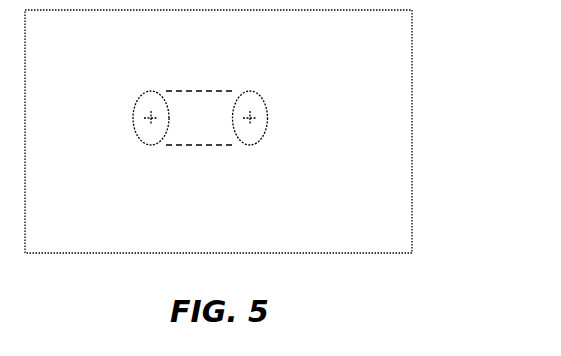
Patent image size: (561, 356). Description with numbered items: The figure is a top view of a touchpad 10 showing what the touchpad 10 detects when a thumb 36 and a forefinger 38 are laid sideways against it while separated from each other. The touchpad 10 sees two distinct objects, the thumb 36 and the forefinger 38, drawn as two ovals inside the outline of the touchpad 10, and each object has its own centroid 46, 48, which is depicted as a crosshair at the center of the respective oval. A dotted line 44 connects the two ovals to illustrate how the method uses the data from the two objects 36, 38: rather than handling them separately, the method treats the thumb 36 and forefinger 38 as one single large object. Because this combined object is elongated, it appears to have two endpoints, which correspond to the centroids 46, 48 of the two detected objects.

The touchpad 10 is at (416, 94).
The thumb 36 is at (153, 92).
The forefinger 38 is at (265, 103).
The dotted line 44 is at (203, 91).
The centroid 46 is at (148, 122).
The centroid 48 is at (268, 127).